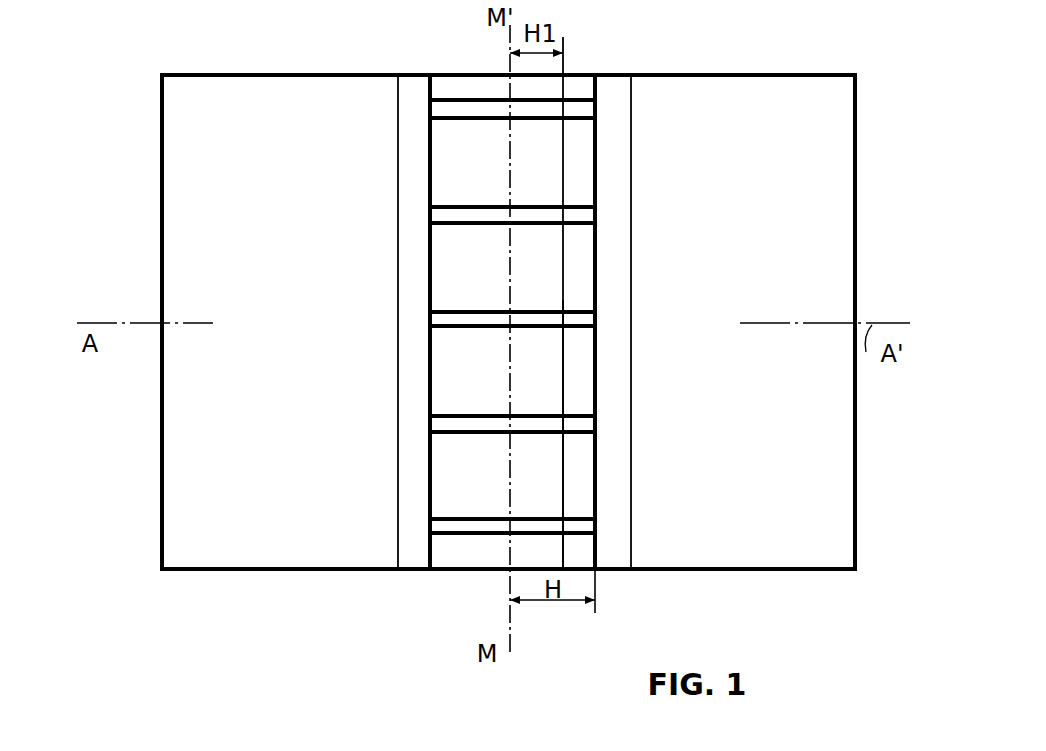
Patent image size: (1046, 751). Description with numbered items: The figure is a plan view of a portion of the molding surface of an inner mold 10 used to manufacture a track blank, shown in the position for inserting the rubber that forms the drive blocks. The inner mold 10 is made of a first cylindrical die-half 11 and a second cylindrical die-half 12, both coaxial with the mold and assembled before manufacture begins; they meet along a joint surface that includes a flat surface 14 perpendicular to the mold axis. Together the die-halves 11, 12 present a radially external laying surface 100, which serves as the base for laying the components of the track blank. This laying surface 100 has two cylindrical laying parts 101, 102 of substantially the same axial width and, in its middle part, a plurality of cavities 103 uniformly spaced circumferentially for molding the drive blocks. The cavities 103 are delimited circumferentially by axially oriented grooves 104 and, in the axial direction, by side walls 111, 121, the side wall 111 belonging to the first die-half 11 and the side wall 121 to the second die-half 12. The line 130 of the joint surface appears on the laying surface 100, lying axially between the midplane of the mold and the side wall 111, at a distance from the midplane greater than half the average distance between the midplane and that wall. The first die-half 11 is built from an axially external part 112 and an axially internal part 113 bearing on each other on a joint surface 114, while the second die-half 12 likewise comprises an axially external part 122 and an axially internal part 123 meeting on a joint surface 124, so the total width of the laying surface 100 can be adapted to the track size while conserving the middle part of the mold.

The inner mold 10 is at (228, 60).
The first cylindrical die-half 11 is at (745, 292).
The second cylindrical die-half 12 is at (297, 498).
The flat surface 14 is at (565, 490).
The laying surface 100 is at (733, 458).
The cylindrical laying part 101 is at (755, 527).
The cylindrical laying part 102 is at (245, 293).
The cavities 103 is at (462, 360).
The axially oriented grooves 104 is at (490, 217).
The side wall 111 is at (596, 270).
The axially external part 112 is at (790, 208).
The axially internal part 113 is at (612, 125).
The joint surface 114 is at (633, 467).
The side wall 121 is at (427, 125).
The axially external part 122 is at (227, 420).
The axially internal part 123 is at (415, 538).
The joint surface 124 is at (397, 203).
The line of the joint surface 130 is at (563, 170).